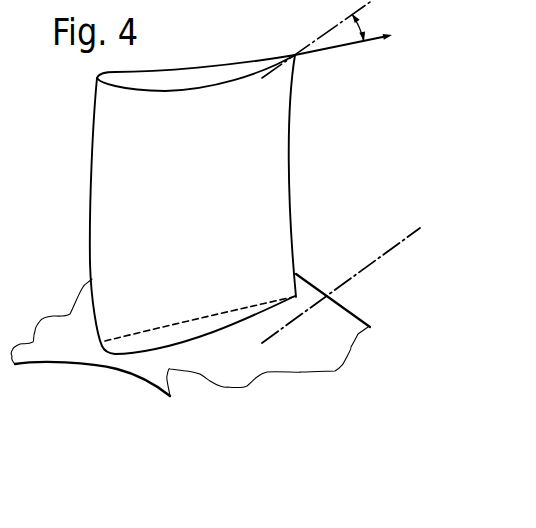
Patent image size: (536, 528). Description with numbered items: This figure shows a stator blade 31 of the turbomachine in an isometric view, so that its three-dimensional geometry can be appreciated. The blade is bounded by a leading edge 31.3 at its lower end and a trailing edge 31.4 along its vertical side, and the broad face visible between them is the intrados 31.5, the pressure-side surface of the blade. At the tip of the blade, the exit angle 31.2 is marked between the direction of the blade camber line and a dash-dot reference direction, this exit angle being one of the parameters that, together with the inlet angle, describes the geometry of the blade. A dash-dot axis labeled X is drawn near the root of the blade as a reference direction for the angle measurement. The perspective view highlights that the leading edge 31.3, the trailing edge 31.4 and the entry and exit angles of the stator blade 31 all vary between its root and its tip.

The stator blade 31 is at (177, 204).
The exit angle 31.2 is at (338, 40).
The leading edge 31.3 is at (87, 338).
The trailing edge 31.4 is at (282, 176).
The intrados 31.5 is at (212, 161).
The axial direction / axis X is at (378, 260).